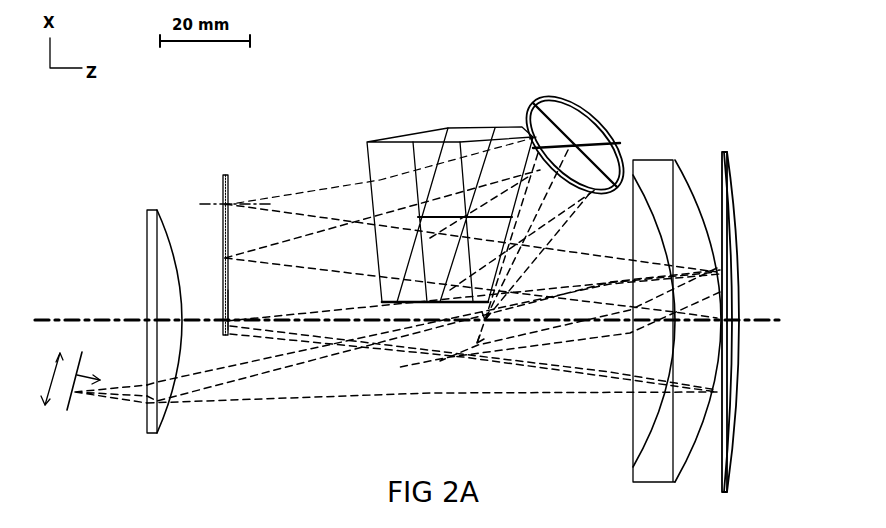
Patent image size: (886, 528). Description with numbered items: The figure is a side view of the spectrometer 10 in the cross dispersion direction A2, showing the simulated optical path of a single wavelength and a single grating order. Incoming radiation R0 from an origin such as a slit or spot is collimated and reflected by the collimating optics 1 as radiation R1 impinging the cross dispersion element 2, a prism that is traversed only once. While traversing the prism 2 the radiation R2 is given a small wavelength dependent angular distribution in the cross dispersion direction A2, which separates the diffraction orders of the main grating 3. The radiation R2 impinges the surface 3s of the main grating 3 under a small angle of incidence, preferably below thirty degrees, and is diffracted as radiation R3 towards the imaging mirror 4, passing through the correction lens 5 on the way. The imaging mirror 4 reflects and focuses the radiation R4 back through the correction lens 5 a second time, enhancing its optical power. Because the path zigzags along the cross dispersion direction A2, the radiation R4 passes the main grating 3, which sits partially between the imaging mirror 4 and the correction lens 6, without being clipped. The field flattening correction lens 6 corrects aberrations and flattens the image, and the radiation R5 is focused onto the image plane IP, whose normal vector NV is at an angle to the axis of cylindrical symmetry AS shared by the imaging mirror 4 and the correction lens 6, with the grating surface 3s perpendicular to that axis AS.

The collimating optics 1 is at (614, 128).
The cross dispersion element 2 is at (412, 129).
The main grating 3 is at (224, 170).
The surface of the main grating 3s is at (232, 311).
The imaging mirror 4 is at (725, 150).
The correction lens 5 is at (665, 158).
The correction lens 6 is at (150, 206).
The spectrometer 10 is at (90, 168).
The incoming radiation R0 is at (605, 221).
The collimated radiation R1 is at (519, 157).
The cross-dispersed radiation R2 is at (349, 191).
The dispersed radiation R3 is at (615, 259).
The reflected radiation R4 is at (398, 404).
The radiation toward image plane R5 is at (137, 416).
The image plane IP is at (87, 346).
The normal vector of the image plane NV is at (102, 373).
The cross dispersion direction A2 is at (47, 394).
The axis of cylindrical symmetry AS is at (424, 321).